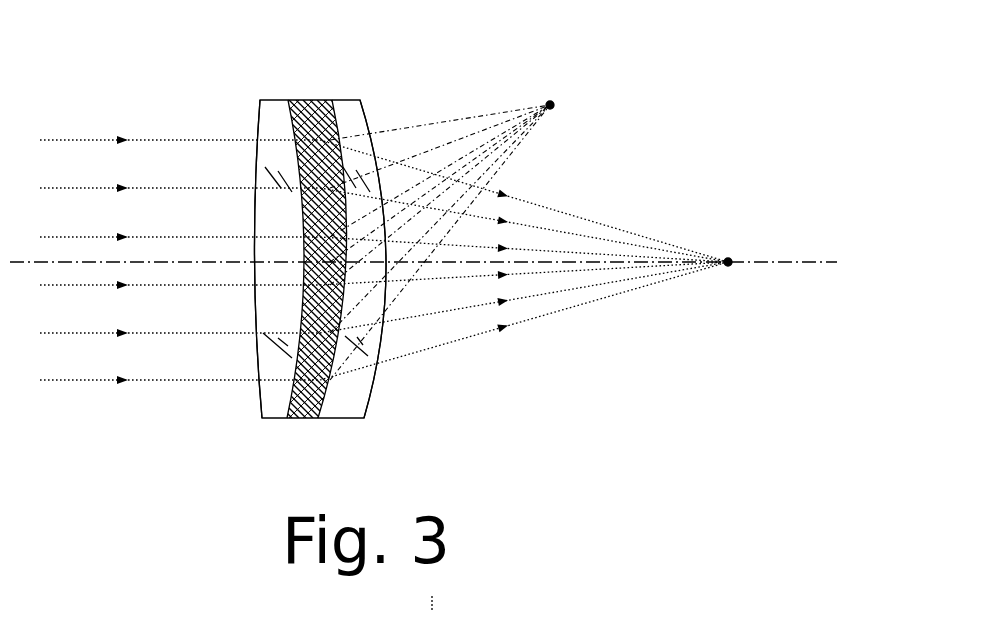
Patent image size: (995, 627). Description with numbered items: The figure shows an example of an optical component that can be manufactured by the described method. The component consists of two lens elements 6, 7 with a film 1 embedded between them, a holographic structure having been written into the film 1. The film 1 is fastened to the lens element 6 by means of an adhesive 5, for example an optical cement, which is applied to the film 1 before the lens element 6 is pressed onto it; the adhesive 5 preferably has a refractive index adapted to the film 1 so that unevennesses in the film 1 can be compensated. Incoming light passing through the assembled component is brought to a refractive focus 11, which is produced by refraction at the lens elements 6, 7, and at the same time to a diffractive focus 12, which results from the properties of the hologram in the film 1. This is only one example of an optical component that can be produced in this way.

The film 1 is at (308, 408).
The adhesive 5 is at (297, 104).
The lens element 6 is at (278, 121).
The lens element 7 is at (343, 410).
The refractive focus 11 is at (730, 272).
The diffractive focus 12 is at (556, 110).